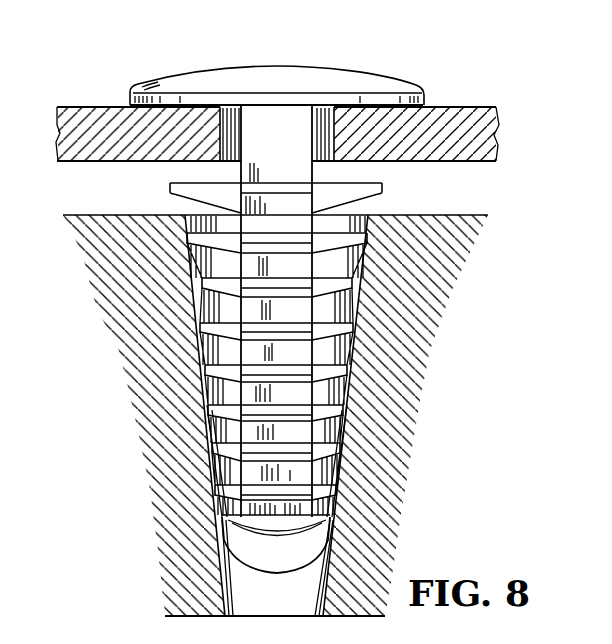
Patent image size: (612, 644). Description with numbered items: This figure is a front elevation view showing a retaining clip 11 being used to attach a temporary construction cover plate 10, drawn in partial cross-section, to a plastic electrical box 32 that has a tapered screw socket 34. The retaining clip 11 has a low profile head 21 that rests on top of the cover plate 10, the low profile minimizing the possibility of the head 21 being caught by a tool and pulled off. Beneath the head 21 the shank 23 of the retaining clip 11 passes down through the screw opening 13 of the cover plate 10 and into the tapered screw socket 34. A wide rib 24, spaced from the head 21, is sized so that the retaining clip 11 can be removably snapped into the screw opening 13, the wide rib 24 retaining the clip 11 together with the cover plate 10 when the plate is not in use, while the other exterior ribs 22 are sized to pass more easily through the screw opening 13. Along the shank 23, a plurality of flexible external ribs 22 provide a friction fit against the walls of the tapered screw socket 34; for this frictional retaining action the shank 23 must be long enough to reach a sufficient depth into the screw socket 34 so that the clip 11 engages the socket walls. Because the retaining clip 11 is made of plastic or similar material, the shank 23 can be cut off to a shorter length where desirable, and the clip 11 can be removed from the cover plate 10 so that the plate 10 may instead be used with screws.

The cover plate 10 is at (100, 107).
The retaining clip 11 is at (280, 290).
The screw opening 13 is at (232, 135).
The head 21 is at (160, 82).
The flexible external ribs 22 is at (212, 304).
The shank 23 is at (200, 347).
The wide rib 24 is at (383, 184).
The plastic electrical box 32 is at (383, 386).
The tapered screw socket 34 is at (345, 403).